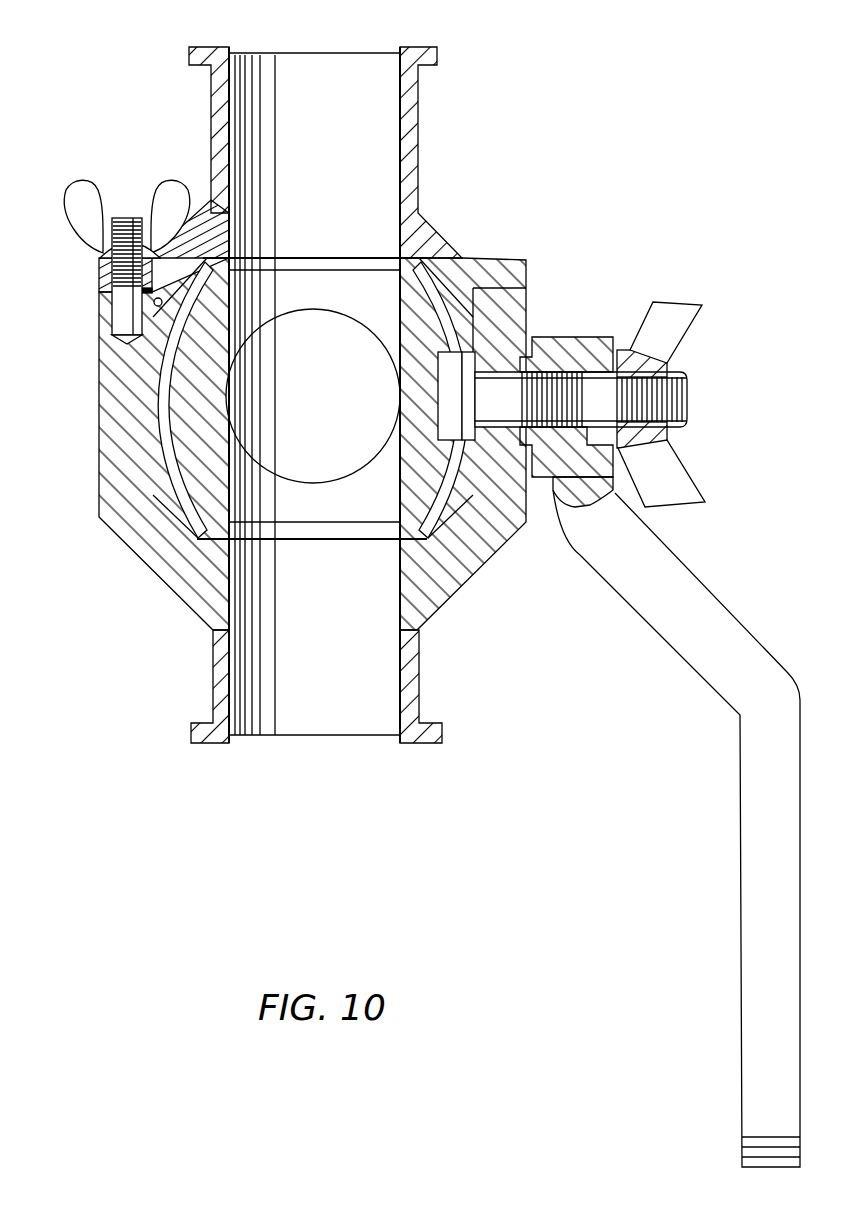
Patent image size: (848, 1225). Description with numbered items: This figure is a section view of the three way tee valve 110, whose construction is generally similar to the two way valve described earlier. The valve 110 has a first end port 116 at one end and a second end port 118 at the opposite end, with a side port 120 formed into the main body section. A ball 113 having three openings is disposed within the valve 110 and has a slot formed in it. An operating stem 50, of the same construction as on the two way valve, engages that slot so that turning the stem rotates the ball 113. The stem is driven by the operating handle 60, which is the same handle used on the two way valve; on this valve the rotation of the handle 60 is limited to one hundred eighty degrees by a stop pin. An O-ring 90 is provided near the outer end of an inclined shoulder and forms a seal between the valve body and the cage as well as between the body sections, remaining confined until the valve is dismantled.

The operating stem 50 is at (557, 372).
The operating handle 60 is at (742, 800).
The O-ring 90 is at (467, 300).
The three way tee valve 110 is at (535, 613).
The ball 113 is at (175, 437).
The first end port 116 is at (395, 80).
The second end port 118 is at (402, 717).
The side port 120 is at (362, 472).